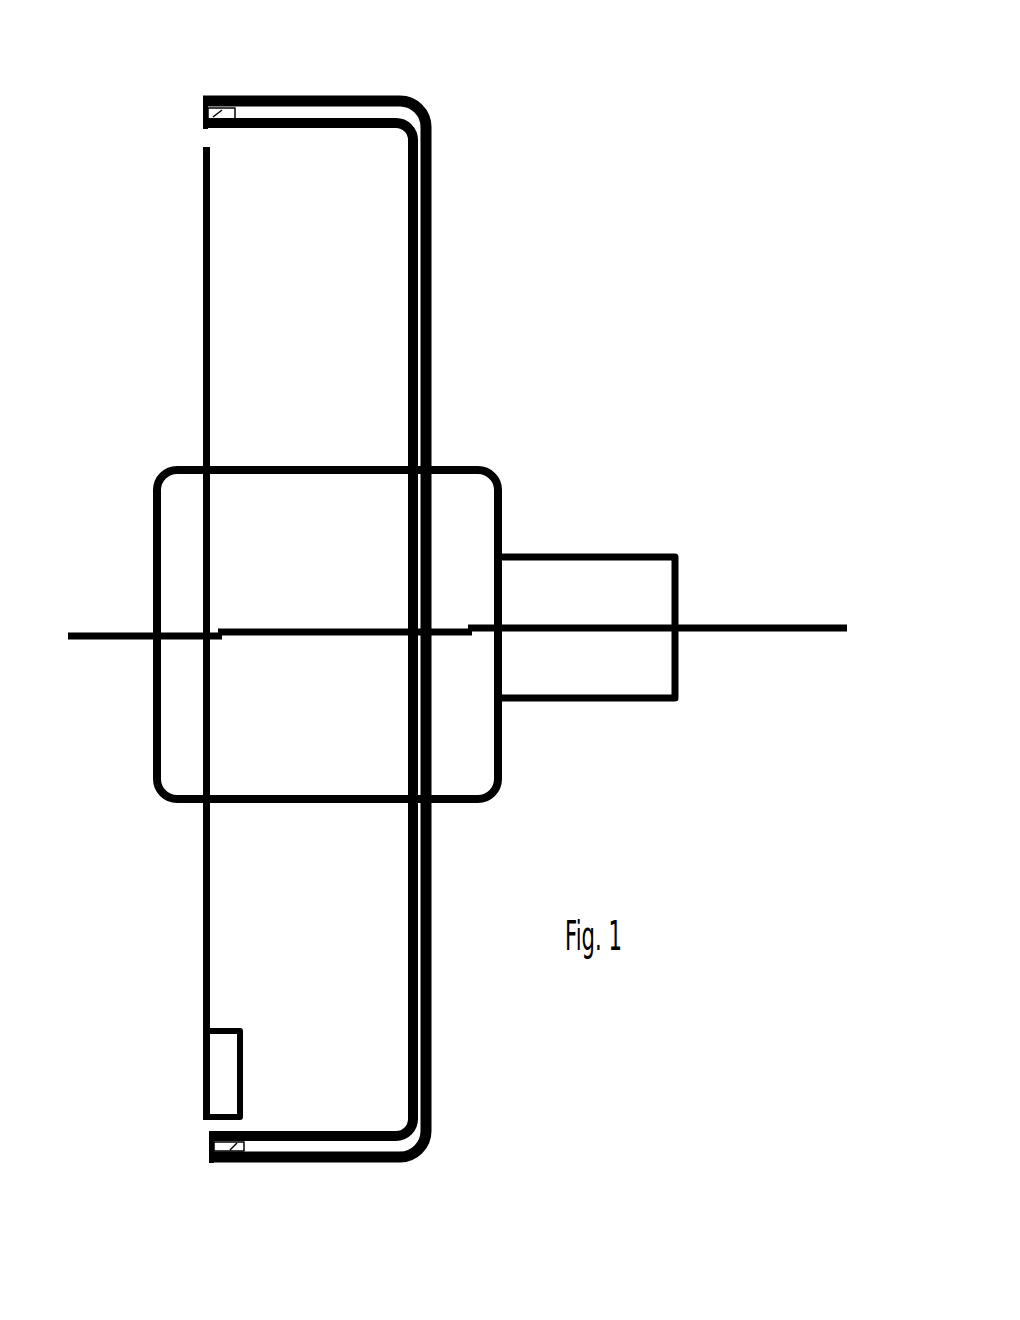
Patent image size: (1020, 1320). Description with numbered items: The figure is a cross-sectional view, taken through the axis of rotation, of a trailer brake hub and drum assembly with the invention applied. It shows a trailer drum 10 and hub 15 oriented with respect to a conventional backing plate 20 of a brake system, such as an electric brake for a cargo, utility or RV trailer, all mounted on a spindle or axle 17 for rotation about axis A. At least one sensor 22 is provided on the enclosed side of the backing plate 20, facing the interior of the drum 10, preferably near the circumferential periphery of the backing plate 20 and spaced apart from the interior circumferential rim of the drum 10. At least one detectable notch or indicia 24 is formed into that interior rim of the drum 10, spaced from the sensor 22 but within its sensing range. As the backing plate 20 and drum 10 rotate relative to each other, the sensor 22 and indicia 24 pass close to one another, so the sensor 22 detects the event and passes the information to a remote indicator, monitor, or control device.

The trailer drum 10 is at (428, 298).
The hub 15 is at (460, 532).
The spindle or axle 17 is at (613, 603).
The backing plate 20 is at (202, 320).
The sensor 22 is at (223, 1078).
The detectable notch or indicia 24 is at (242, 95).
The axis A is at (797, 622).